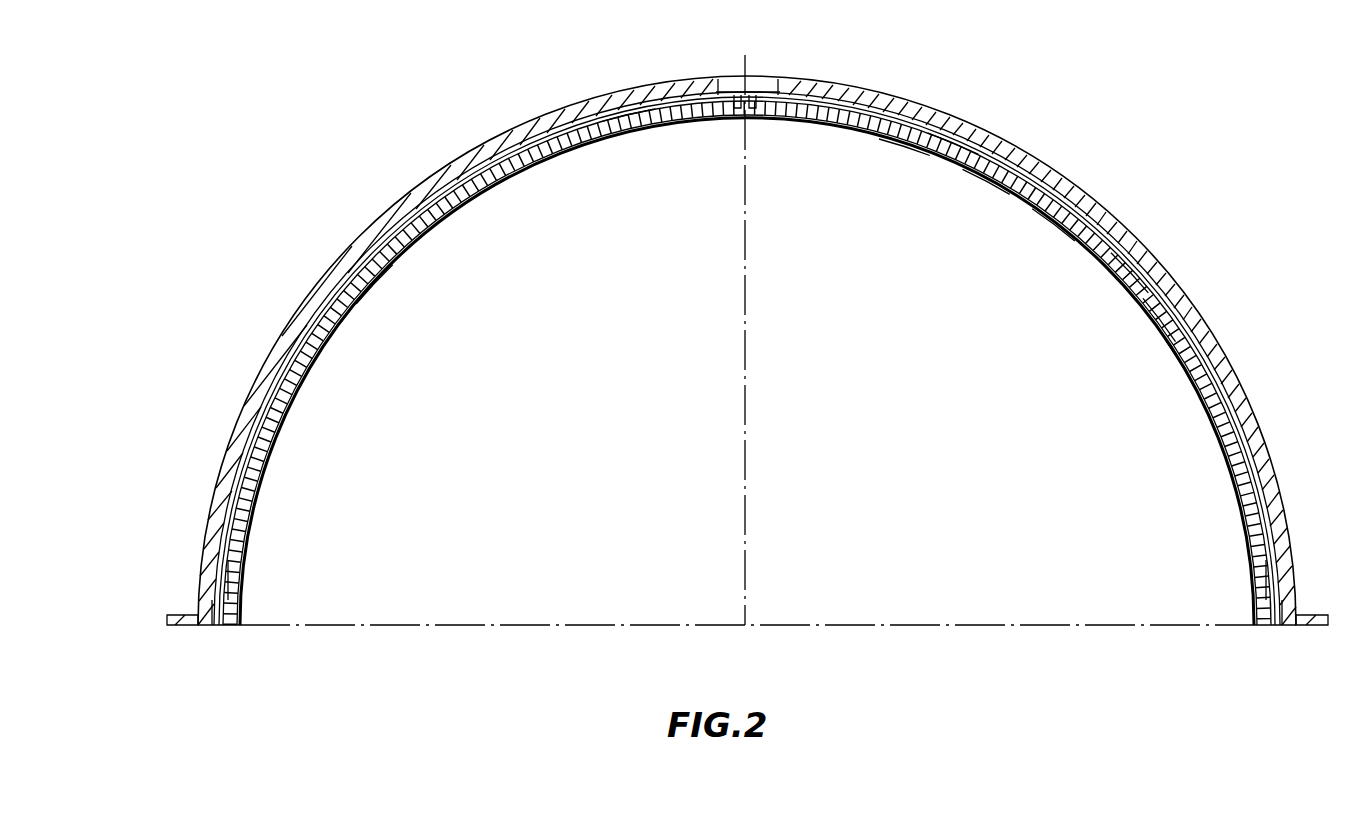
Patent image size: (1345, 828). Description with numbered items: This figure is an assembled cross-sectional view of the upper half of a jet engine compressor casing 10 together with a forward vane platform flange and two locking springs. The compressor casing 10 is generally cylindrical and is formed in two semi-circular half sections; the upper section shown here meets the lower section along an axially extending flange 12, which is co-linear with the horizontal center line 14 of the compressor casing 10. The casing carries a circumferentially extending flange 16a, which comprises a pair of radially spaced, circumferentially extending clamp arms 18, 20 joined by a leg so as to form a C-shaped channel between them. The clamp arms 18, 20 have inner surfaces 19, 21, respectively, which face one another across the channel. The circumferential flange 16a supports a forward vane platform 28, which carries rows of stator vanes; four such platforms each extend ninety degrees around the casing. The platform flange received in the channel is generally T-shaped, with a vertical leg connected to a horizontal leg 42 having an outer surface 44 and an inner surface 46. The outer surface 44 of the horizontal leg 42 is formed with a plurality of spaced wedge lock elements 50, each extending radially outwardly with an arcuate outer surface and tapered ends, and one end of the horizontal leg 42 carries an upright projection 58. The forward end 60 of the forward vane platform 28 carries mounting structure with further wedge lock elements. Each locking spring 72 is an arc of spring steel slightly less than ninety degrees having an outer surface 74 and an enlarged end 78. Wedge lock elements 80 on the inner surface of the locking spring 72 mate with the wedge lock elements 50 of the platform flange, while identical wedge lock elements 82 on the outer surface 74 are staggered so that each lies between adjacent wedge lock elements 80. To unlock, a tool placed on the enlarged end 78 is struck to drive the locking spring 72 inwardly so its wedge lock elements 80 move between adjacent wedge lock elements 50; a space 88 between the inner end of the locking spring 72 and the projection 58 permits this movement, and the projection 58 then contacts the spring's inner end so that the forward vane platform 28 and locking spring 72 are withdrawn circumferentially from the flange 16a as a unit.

The compressor casing 10 is at (988, 138).
The axially extending flange 12 is at (190, 626).
The horizontal center line 14 is at (1012, 628).
The circumferentially extending flange 16a is at (1046, 252).
The clamp arm 18 is at (466, 160).
The inner surface 19 is at (1050, 172).
The clamp arm 20 is at (470, 195).
The inner surface 21 is at (905, 140).
The forward vane platform 28 is at (228, 567).
The horizontal leg 42 is at (362, 287).
The outer surface 44 is at (1100, 222).
The inner surface 46 is at (990, 175).
The wedge lock element 50 is at (397, 248).
The upright projection 58 is at (735, 115).
The forward end 60 is at (930, 130).
The locking spring 72 is at (603, 125).
The outer surface 74 is at (1140, 248).
The enlarged end 78 is at (212, 626).
The wedge lock element 80 is at (1178, 302).
The wedge lock element 82 is at (1160, 280).
The space 88 is at (772, 100).